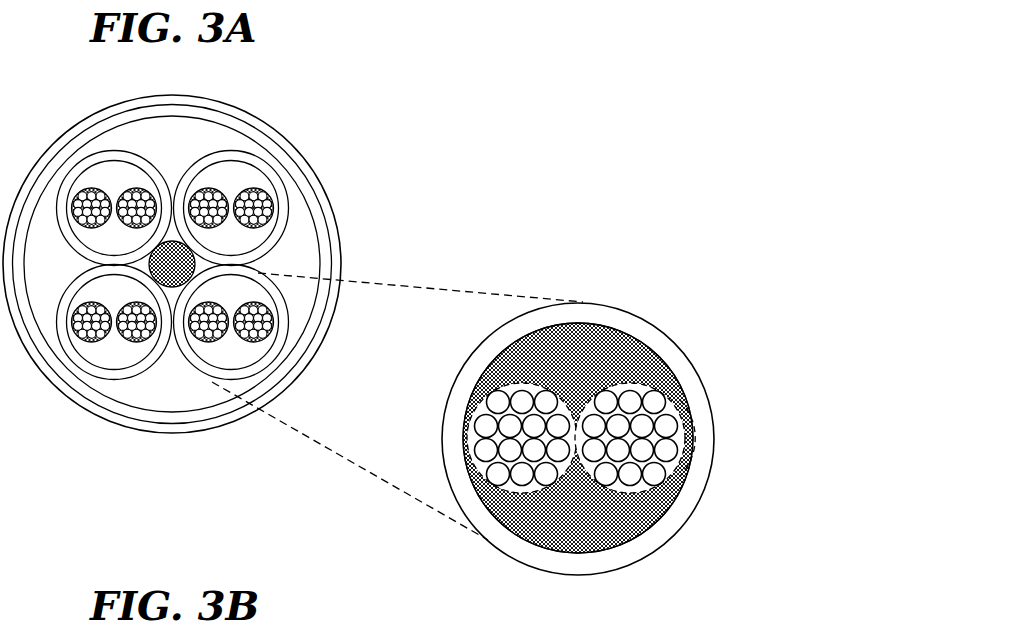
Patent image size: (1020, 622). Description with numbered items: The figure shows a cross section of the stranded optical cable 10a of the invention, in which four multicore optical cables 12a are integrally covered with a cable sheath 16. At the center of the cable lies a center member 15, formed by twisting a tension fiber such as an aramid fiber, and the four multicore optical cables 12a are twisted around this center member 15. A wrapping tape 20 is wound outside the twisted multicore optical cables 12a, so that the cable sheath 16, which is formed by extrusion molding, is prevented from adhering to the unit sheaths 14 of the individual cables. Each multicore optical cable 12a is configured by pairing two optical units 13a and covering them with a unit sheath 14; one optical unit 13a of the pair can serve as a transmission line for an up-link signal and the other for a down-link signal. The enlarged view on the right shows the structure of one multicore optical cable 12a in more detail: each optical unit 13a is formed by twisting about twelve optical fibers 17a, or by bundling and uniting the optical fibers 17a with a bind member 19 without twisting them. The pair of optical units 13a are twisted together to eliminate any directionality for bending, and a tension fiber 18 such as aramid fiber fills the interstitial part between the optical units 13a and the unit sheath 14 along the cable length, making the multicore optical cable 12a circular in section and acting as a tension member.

In FIG. 3A, the multicore cable 10a is at (288, 152).
In FIG. 3A, the multicore optical cable 12a is at (288, 198).
In FIG. 3B, the multicore optical cable 12a is at (598, 303).
In FIG. 3A, the optical unit 13a is at (258, 238).
In FIG. 3B, the optical unit 13a is at (477, 488).
In FIG. 3A, the unit sheath 14 is at (283, 253).
In FIG. 3B, the unit sheath 14 is at (467, 385).
In FIG. 3A, the center member 15 is at (142, 338).
In FIG. 3A, the cable sheath 16 is at (210, 417).
In FIG. 3B, the optical fiber 17a is at (603, 489).
In FIG. 3B, the tension fiber 18 is at (608, 528).
In FIG. 3B, the bind member 19 is at (672, 478).
In FIG. 3A, the wrapping tape 20 is at (170, 415).